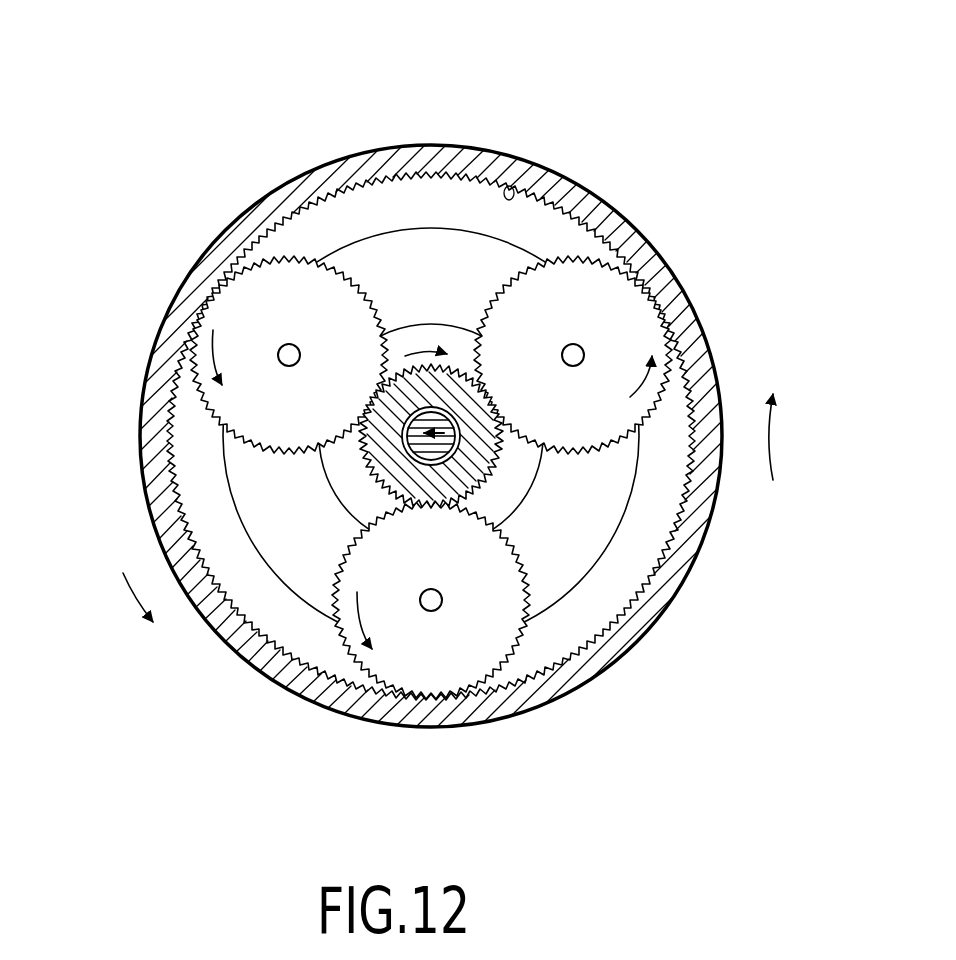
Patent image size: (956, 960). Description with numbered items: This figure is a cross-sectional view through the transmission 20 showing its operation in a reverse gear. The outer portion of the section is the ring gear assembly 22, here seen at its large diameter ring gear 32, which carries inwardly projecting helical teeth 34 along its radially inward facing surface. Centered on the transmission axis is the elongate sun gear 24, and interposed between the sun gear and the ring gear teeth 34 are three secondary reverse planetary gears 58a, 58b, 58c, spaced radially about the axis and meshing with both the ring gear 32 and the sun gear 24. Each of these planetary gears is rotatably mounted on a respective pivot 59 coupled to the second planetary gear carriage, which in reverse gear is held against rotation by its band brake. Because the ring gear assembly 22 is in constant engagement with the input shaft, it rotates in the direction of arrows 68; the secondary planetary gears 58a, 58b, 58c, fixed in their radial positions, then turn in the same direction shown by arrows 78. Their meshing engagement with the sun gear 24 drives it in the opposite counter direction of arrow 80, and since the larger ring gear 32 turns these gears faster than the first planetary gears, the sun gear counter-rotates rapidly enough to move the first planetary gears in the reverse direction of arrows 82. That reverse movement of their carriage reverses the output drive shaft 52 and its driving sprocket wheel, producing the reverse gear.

The transmission 20 is at (672, 672).
The ring gear assembly 22 is at (634, 214).
The sun gear 24 is at (450, 452).
The large diameter ring gear 32 is at (462, 146).
The helical teeth 34 is at (518, 186).
The output drive shaft 52 is at (405, 377).
The secondary reverse planetary gear 58a is at (254, 290).
The secondary reverse planetary gear 58b is at (613, 293).
The secondary reverse planetary gear 58c is at (373, 565).
The pivot 59 is at (278, 362).
The direction of rotation of ring gear assembly 68 is at (130, 600).
The direction of rotation of secondary planetary gears 78 is at (205, 370).
The direction of counter rotation of sun gear 80 is at (462, 374).
The reverse direction of first planetary gears 82 is at (420, 432).